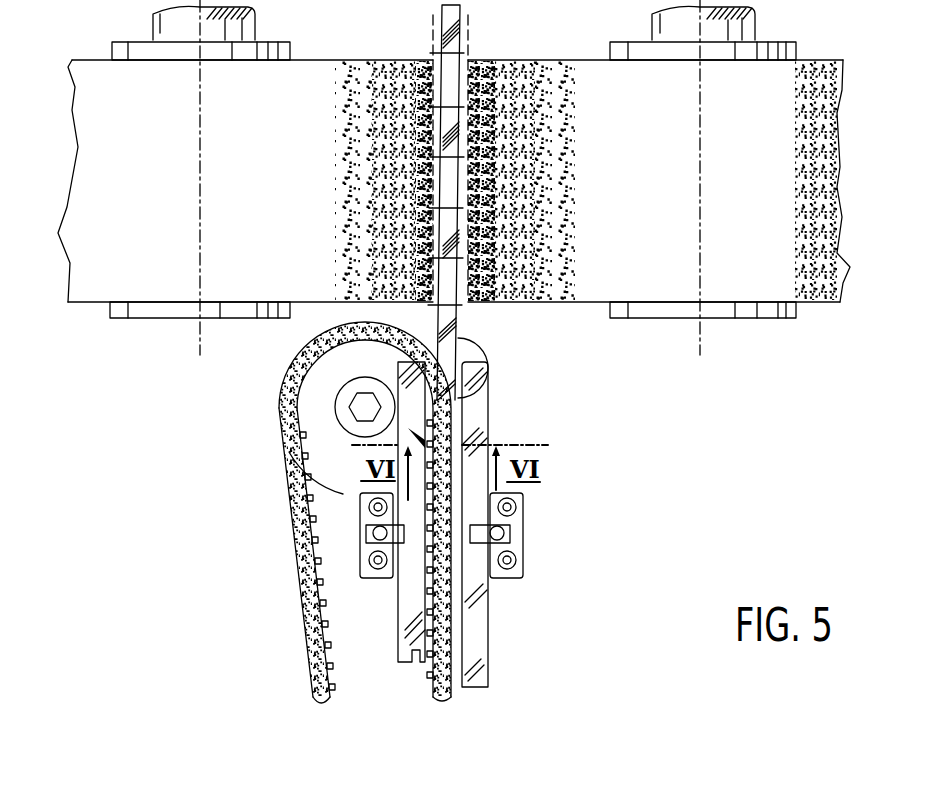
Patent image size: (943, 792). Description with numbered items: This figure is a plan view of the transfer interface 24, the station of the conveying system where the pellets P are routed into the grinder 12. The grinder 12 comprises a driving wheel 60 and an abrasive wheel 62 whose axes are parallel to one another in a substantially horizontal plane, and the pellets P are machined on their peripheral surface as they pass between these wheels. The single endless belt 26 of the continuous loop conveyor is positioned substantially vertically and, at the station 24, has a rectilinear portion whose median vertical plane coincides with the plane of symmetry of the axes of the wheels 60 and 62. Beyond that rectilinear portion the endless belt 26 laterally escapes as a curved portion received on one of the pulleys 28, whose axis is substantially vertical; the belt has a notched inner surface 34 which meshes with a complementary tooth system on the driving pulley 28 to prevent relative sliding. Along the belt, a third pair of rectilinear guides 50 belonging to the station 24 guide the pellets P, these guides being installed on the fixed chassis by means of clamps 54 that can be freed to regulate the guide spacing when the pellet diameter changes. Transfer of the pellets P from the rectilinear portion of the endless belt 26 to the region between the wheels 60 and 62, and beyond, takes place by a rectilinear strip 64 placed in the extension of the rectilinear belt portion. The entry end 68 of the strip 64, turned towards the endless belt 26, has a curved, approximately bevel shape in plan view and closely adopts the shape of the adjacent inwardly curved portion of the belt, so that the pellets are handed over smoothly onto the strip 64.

The grinder 12 is at (742, 352).
The transfer interface 24 is at (280, 531).
The endless belt 26 is at (292, 611).
The pulley 28 is at (318, 415).
The notched inner surface 34 is at (313, 662).
The third pair of rectilinear guides 50 is at (410, 660).
The clamps 54 is at (400, 543).
The driving wheel 60 is at (773, 127).
The abrasive wheel 62 is at (118, 112).
The rectilinear strip 64 is at (455, 338).
The entry end 68 is at (458, 398).
The pellets P is at (466, 44).